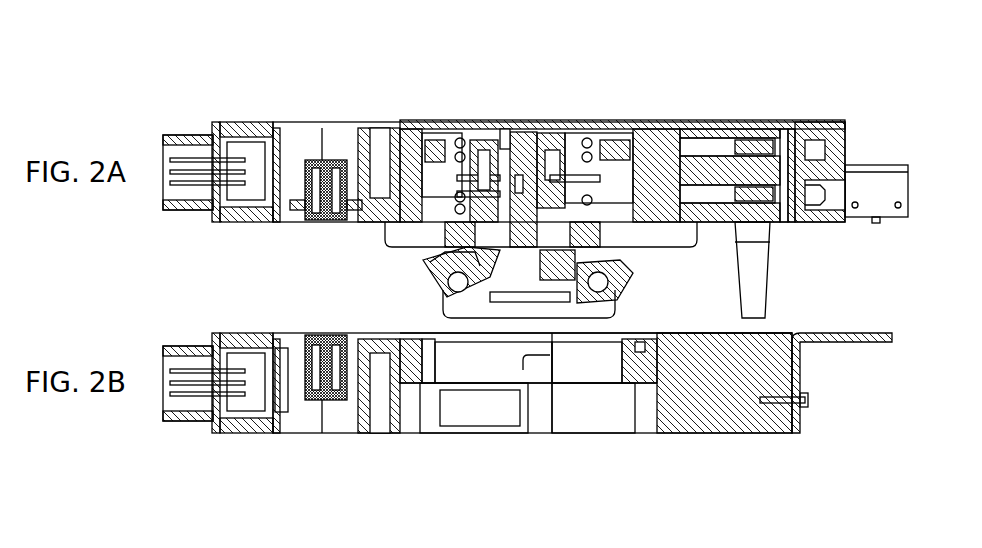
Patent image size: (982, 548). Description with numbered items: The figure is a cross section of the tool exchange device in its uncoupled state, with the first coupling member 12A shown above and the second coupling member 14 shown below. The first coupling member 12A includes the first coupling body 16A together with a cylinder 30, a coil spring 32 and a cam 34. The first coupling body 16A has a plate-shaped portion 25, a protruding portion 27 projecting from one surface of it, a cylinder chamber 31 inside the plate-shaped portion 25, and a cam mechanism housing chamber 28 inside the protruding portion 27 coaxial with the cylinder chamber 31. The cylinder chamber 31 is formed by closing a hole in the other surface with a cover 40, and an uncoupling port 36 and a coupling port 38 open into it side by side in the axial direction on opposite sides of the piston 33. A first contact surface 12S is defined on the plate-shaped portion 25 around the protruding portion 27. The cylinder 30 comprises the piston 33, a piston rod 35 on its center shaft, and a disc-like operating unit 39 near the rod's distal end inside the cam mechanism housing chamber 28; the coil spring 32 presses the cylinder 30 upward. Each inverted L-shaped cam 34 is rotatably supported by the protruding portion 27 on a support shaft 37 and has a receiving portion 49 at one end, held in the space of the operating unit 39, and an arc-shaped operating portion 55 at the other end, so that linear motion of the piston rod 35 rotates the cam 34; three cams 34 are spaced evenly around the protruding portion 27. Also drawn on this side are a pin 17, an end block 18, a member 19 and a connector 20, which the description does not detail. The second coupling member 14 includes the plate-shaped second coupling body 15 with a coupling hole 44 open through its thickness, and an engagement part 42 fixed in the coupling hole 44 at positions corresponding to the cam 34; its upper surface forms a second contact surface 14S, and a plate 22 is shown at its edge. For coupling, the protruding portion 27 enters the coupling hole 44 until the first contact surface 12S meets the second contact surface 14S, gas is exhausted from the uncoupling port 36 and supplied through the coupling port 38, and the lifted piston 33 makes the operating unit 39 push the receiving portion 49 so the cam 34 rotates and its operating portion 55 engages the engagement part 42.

In FIG. 2A, the first coupling member 12A is at (853, 112).
In FIG. 2A, the first contact surface 12S is at (392, 222).
In FIG. 2B, the second coupling member 14 is at (808, 450).
In FIG. 2B, the second contact surface 14S is at (770, 333).
In FIG. 2B, the second coupling body 15 is at (698, 405).
In FIG. 2A, the first coupling body 16A is at (710, 120).
In FIG. 2A, the positioning pin 17 is at (762, 282).
In FIG. 2A, the end block 18 is at (867, 130).
In FIG. 2A, the pilot valve portion 19 is at (838, 158).
In FIG. 2A, the connector 20 is at (895, 190).
In FIG. 2B, the mounting plate 22 is at (885, 333).
In FIG. 2A, the plate-shaped portion 25 is at (727, 150).
In FIG. 2A, the protruding portion 27 is at (440, 312).
In FIG. 2A, the cam mechanism housing chamber 28 is at (452, 244).
In FIG. 2A, the cylinder 30 is at (575, 118).
In FIG. 2A, the cylinder chamber 31 is at (433, 180).
In FIG. 2A, the coil spring 32 is at (450, 185).
In FIG. 2A, the piston 33 is at (628, 118).
In FIG. 2A, the cam 34 is at (440, 252).
In FIG. 2A, the piston rod 35 is at (430, 268).
In FIG. 2A, the uncoupling port 36 is at (796, 150).
In FIG. 2A, the support shaft 37 is at (447, 283).
In FIG. 2A, the coupling port 38 is at (784, 197).
In FIG. 2A, the operating unit 39 is at (635, 262).
In FIG. 2A, the cover 40 is at (536, 118).
In FIG. 2B, the engagement part 42 is at (425, 392).
In FIG. 2B, the coupling hole 44 is at (478, 408).
In FIG. 2A, the receiving portion 49 is at (480, 195).
In FIG. 2A, the operating portion 55 is at (625, 243).